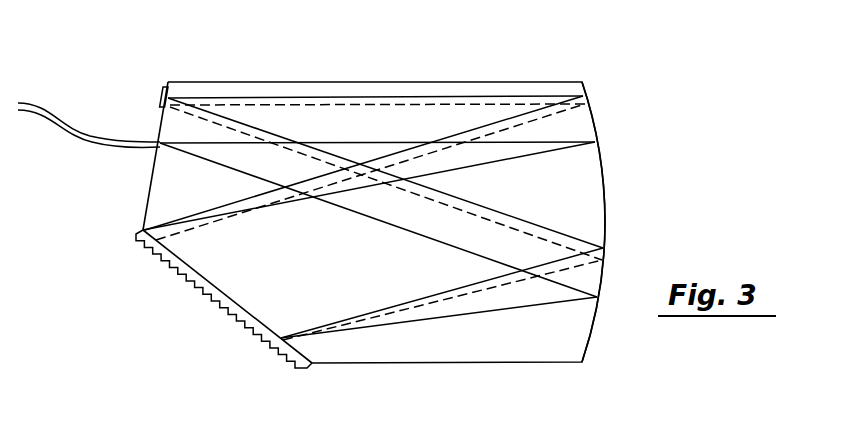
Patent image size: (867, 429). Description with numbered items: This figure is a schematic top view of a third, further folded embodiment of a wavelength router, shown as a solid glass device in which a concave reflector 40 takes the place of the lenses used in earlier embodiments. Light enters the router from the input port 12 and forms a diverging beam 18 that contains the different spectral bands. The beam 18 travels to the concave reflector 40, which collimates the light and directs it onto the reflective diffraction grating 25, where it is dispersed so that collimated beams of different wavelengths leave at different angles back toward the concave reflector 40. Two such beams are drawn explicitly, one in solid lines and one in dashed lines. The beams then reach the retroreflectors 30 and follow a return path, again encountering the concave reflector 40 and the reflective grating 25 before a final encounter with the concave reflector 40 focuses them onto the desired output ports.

The input port 12 is at (160, 143).
The diverging beam 18 is at (185, 133).
The reflective diffraction grating 25 is at (218, 308).
The retroreflectors 30 is at (163, 98).
The concave reflector 40 is at (605, 217).